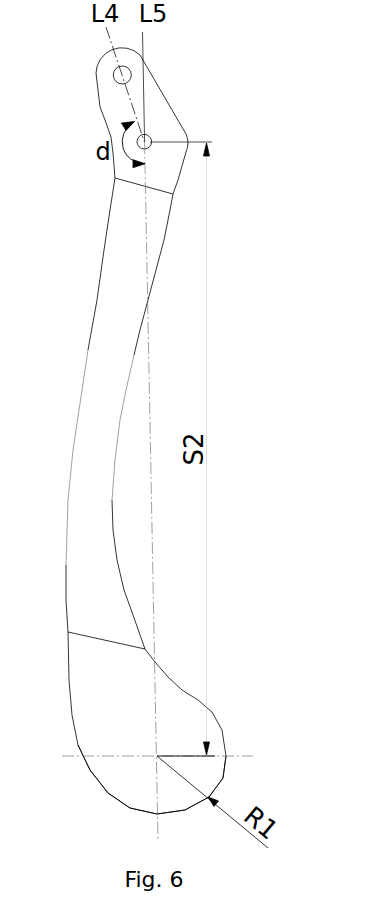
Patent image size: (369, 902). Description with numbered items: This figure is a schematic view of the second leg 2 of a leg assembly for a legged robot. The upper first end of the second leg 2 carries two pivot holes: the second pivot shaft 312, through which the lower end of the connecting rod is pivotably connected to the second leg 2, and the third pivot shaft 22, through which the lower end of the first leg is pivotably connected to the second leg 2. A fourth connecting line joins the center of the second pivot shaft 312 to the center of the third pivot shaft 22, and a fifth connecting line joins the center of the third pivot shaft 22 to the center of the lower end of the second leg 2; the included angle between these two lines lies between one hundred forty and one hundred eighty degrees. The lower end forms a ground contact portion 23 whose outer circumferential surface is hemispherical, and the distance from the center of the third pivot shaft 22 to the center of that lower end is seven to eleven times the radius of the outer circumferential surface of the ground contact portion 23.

The second leg 2 is at (87, 365).
The third pivot shaft 22 is at (150, 137).
The ground contact portion 23 is at (127, 787).
The second pivot shaft 312 is at (113, 77).